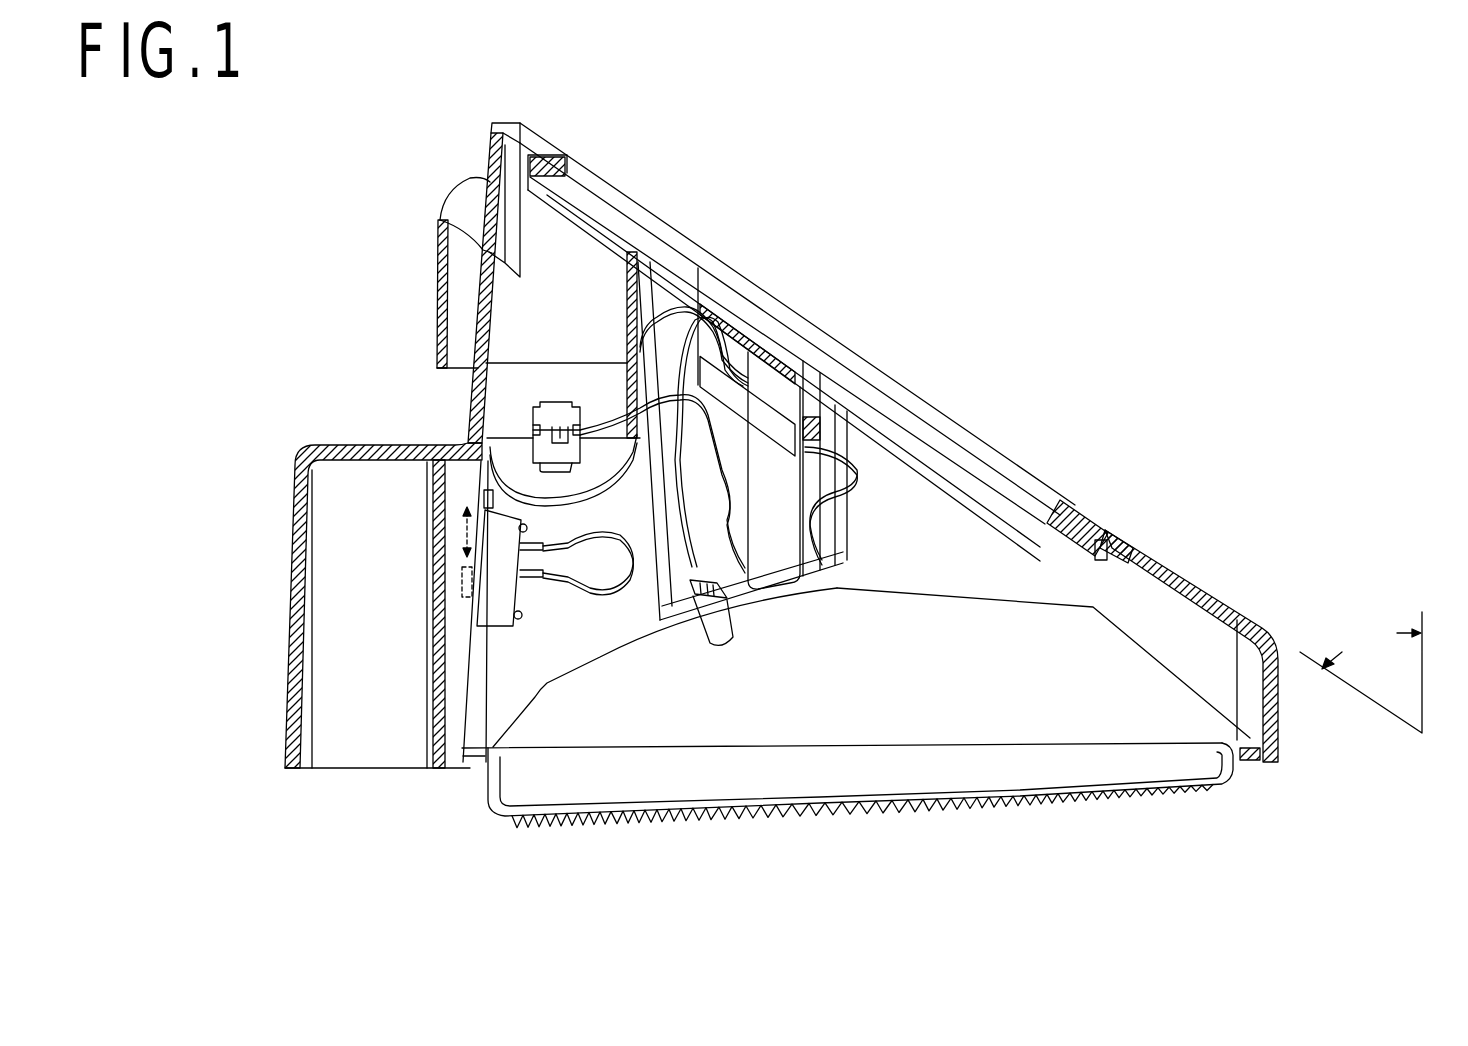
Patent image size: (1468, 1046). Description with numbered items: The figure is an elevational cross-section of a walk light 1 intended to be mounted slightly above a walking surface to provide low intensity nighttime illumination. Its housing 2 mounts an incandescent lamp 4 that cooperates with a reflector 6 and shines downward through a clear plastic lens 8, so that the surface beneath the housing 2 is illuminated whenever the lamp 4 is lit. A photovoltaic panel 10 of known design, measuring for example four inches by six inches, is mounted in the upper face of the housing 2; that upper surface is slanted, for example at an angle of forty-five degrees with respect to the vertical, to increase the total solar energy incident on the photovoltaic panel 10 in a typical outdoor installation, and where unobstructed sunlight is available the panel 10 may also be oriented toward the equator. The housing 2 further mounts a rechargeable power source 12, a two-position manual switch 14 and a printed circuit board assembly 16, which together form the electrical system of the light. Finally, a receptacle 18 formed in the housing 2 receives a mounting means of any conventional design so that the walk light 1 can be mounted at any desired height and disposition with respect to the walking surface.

The walk light 1 is at (296, 339).
The housing 2 is at (1085, 512).
The incandescent lamp 4 is at (710, 648).
The reflector 6 is at (967, 597).
The clear plastic lens 8 is at (1170, 797).
The photovoltaic panel 10 is at (908, 422).
The rechargeable power source 12 is at (533, 445).
The two-position manual switch 14 is at (503, 587).
The printed circuit board assembly 16 is at (697, 573).
The receptacle 18 is at (385, 639).